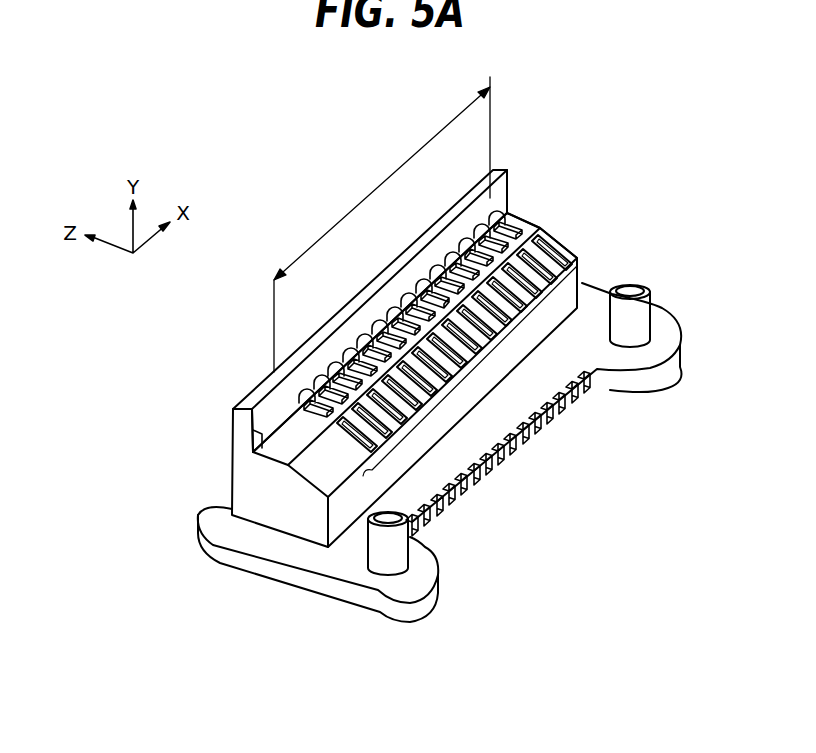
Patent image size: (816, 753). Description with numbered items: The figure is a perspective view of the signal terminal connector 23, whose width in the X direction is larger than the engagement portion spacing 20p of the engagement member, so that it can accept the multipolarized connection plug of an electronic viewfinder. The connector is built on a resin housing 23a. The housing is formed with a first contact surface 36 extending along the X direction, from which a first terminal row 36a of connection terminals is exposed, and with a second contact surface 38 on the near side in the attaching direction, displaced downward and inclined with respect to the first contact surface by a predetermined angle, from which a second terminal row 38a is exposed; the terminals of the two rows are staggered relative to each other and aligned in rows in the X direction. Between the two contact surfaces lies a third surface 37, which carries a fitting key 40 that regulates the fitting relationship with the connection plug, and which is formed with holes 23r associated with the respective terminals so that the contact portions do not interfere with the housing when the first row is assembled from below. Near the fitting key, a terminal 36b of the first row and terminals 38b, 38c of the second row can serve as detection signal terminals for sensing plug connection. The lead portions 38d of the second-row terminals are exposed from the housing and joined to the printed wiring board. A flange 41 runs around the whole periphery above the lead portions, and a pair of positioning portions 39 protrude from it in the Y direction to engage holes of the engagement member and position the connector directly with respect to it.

The engagement portion spacing 20p is at (382, 224).
The signal terminal connector 23 is at (408, 396).
The resin housing 23a is at (252, 498).
The holes 23r is at (540, 235).
The first contact surface 36 is at (369, 307).
The first terminal row 36a is at (383, 285).
The terminal 36b is at (289, 398).
The third surface 37 is at (510, 228).
The second contact surface 38 is at (439, 375).
The second terminal row 38a is at (498, 434).
The terminal 38b is at (356, 446).
The terminal 38c is at (352, 455).
The lead portion 38d is at (424, 543).
The positioning portions 39 is at (389, 550).
The fitting key 40 is at (260, 442).
The flange 41 is at (337, 560).